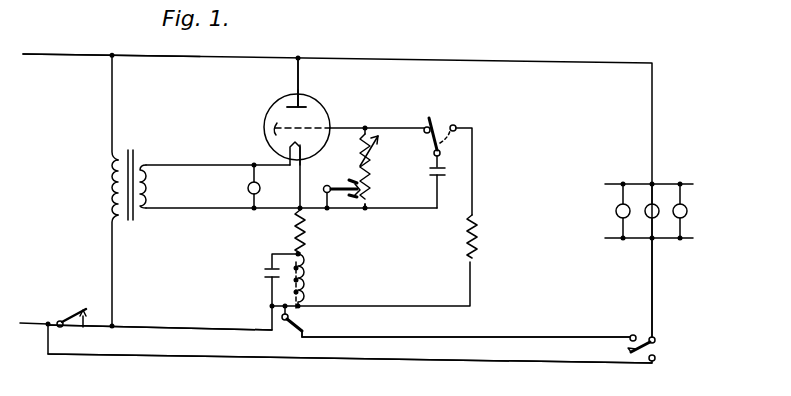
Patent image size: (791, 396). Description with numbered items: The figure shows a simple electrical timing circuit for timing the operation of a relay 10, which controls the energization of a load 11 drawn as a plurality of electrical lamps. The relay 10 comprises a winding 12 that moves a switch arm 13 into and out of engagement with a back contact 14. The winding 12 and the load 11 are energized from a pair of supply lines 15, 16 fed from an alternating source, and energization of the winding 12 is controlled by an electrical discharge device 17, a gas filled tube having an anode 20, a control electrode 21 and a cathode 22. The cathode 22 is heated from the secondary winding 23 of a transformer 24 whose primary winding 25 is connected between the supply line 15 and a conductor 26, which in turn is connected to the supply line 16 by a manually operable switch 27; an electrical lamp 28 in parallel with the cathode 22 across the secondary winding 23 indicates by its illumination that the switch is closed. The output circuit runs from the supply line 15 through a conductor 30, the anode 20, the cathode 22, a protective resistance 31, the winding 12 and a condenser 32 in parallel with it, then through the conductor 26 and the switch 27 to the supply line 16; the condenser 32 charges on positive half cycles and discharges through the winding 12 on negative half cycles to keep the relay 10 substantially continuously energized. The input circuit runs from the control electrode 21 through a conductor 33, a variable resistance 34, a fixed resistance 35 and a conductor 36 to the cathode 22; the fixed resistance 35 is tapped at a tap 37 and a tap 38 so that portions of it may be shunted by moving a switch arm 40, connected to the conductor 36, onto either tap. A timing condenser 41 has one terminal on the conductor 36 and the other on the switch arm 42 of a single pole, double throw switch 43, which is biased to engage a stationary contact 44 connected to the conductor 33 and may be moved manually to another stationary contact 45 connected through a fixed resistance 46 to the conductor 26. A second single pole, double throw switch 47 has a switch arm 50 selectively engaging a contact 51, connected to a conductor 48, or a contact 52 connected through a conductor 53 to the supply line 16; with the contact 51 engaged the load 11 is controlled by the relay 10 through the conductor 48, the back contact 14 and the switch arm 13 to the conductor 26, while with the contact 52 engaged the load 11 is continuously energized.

The relay 10 is at (316, 287).
The load 11 is at (617, 246).
The winding 12 is at (306, 272).
The switch arm 13 is at (287, 324).
The back contact 14 is at (306, 328).
The supply line 15 is at (60, 57).
The supply line 16 is at (32, 321).
The electrical discharge device 17 is at (322, 107).
The anode 20 is at (290, 104).
The control electrode 21 is at (269, 145).
The cathode 22 is at (305, 153).
The secondary winding 23 is at (150, 188).
The transformer 24 is at (134, 223).
The primary winding 25 is at (107, 188).
The conductor 26 is at (140, 327).
The manually operable switch 27 is at (74, 325).
The electrical lamp 28 is at (247, 188).
The conductor 30 is at (303, 77).
The resistance 31 is at (304, 236).
The condenser 32 is at (265, 280).
The conductor 33 is at (350, 127).
The variable resistance 34 is at (371, 151).
The fixed resistance 35 is at (364, 190).
The conductor 36 is at (367, 209).
The tap 37 is at (349, 179).
The tap 38 is at (350, 199).
The switch arm 40 is at (323, 186).
The timing condenser 41 is at (431, 176).
The switch arm 42 is at (430, 140).
The single pole, double throw switch 43 is at (443, 118).
The stationary contact 44 is at (425, 126).
The stationary contact 45 is at (457, 126).
The fixed resistance 46 is at (473, 242).
The single pole, double throw switch 47 is at (660, 352).
The conductor 48 is at (494, 337).
The switch arm 50 is at (628, 351).
The contact 51 is at (633, 335).
The contact 52 is at (655, 362).
The conductor 53 is at (517, 362).